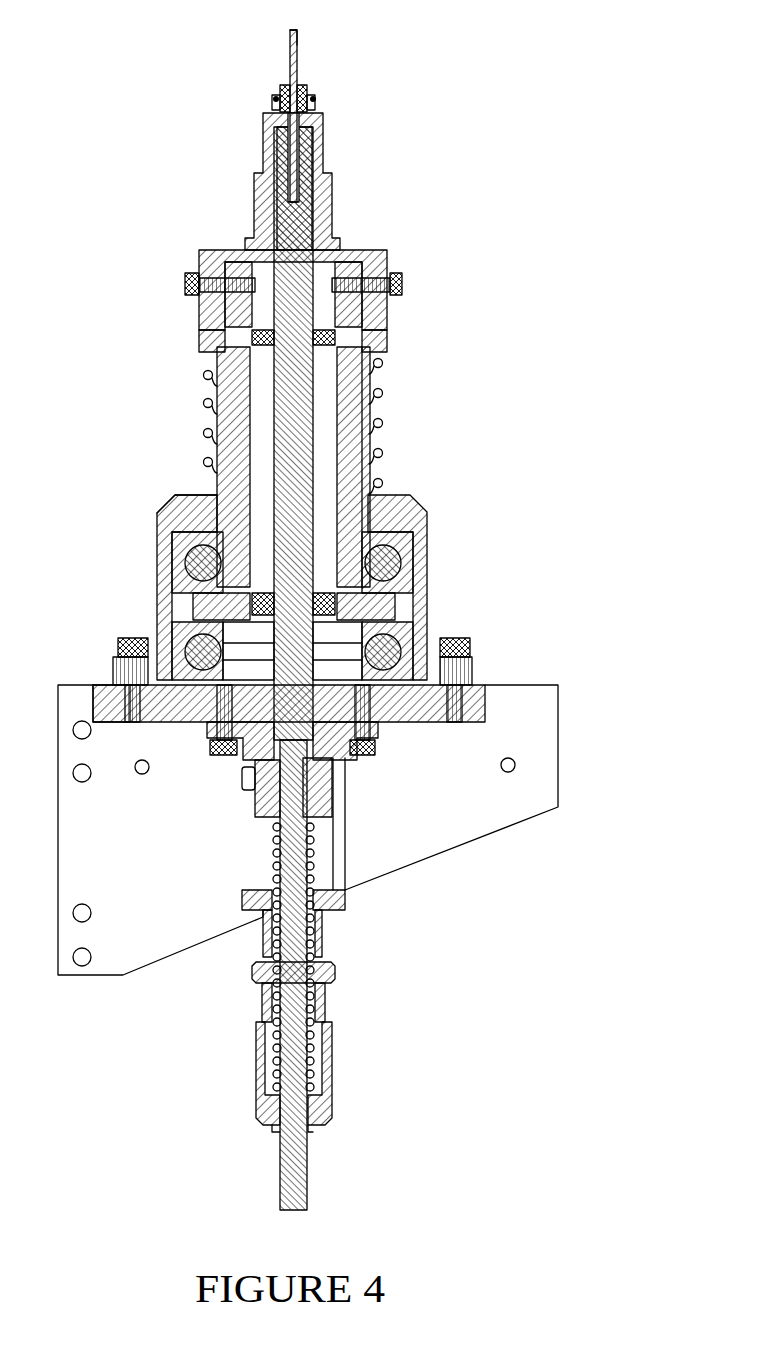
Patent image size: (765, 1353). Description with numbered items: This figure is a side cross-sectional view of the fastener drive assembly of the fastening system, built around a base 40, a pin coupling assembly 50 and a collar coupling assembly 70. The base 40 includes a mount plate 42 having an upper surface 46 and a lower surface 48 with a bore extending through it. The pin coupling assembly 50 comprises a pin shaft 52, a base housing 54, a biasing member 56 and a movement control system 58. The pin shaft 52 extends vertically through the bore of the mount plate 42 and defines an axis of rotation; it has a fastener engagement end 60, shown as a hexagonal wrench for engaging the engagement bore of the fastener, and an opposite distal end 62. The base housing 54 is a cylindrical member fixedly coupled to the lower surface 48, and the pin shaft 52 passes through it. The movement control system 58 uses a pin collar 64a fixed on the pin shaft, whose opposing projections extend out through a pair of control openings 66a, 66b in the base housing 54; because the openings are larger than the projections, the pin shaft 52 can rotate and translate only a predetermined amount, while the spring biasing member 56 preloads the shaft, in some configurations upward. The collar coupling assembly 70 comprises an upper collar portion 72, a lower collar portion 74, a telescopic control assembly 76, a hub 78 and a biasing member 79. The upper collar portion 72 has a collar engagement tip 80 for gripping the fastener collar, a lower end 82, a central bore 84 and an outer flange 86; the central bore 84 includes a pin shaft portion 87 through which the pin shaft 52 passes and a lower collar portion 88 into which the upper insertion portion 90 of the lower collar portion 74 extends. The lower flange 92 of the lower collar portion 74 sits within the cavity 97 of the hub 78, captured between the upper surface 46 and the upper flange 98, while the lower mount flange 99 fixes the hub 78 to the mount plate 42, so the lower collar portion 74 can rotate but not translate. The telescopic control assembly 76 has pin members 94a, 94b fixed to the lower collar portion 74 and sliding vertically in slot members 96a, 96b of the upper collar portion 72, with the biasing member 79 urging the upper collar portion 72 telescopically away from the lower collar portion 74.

The base 40 is at (572, 747).
The mount plate 42 is at (294, 685).
The upper surface 46 is at (103, 690).
The lower surface 48 is at (482, 722).
The pin coupling assembly 50 is at (312, 1021).
The pin shaft 52 is at (326, 101).
The base housing 54 is at (348, 963).
The biasing member 56 is at (265, 1040).
The movement control system 58 is at (252, 800).
The fastener engagement end 60 is at (298, 32).
The distal end 62 is at (280, 1188).
The pin 64a is at (242, 780).
The control opening 66a is at (273, 872).
The control opening 66b is at (322, 830).
The collar coupling assembly 70 is at (255, 424).
The upper collar portion 72 is at (333, 181).
The lower collar portion 74 is at (293, 574).
The telescopic control assembly 76 is at (298, 282).
The hub 78 is at (277, 574).
The biasing member 79 is at (207, 407).
The collar engagement tip 80 is at (314, 100).
The lower end 82 is at (383, 452).
The central bore 84 is at (352, 357).
The flange 86 is at (287, 424).
The pin shaft portion 87 is at (312, 132).
The lower collar portion of central bore 88 is at (350, 405).
The upper insertion portion 90 is at (358, 265).
The lower flange 92 is at (398, 607).
The pin member 94a is at (187, 285).
The pin member 94b is at (415, 268).
The slot member 96a is at (200, 316).
The slot member 96b is at (388, 320).
The cavity 97 is at (193, 562).
The upper flange 98 is at (170, 512).
The lower mount flange 99 is at (462, 662).